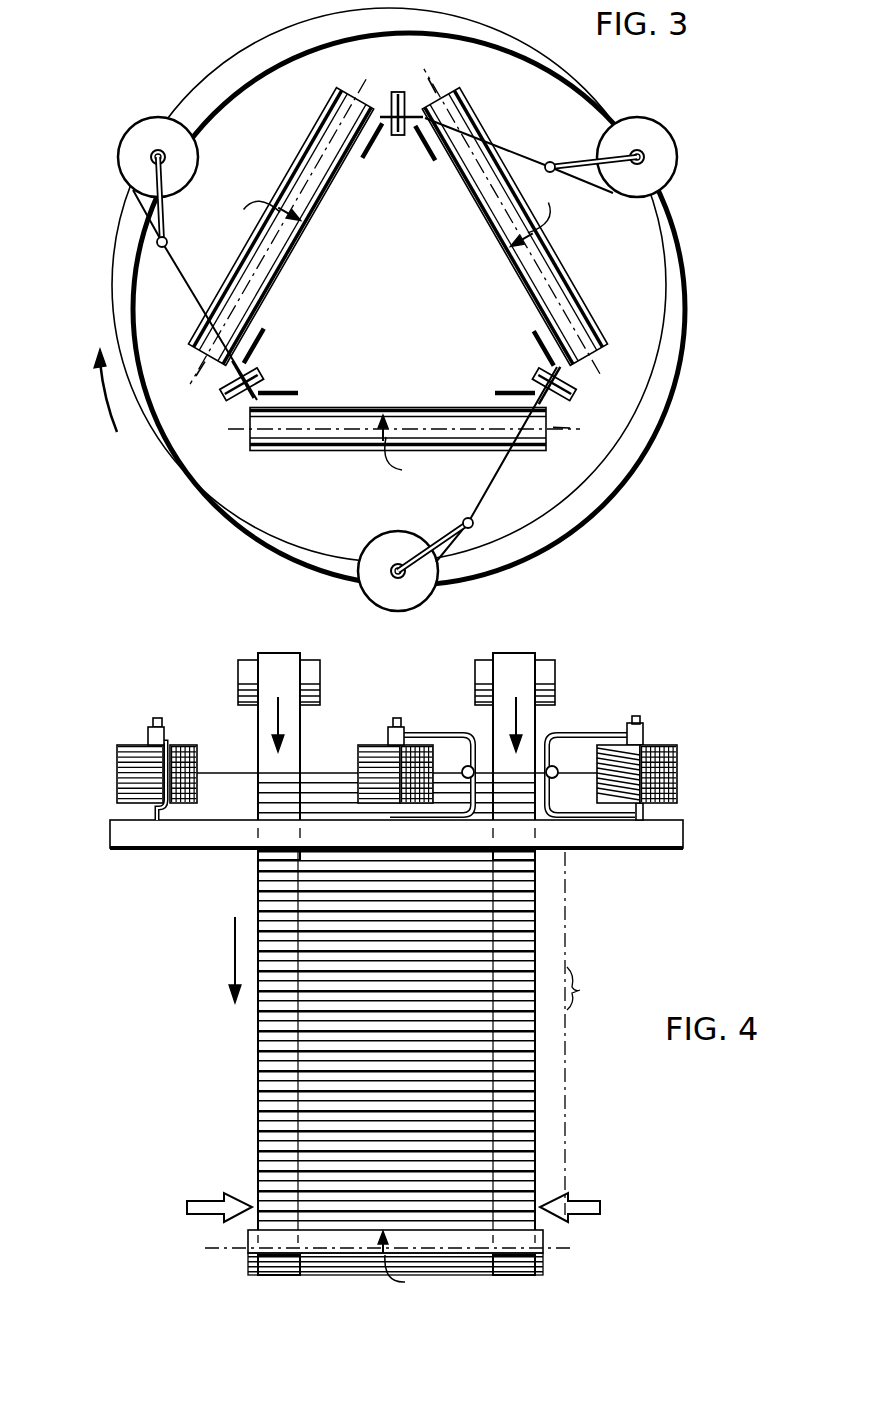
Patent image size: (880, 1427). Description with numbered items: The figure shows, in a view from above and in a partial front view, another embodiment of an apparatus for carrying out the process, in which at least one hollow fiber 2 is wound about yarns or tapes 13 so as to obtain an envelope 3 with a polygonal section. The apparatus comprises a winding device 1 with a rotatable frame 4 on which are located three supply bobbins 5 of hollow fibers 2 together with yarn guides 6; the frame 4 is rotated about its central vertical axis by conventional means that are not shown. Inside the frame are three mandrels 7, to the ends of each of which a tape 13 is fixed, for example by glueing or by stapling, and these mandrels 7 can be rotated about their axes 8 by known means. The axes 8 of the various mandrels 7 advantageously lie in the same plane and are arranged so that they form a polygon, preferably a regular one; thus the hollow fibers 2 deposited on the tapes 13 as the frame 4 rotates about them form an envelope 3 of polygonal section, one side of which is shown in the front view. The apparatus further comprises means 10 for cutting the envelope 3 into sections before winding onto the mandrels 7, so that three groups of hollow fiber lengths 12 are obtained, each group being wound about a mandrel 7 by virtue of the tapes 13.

In FIG. 3, the winding device 1 is at (694, 248).
In FIG. 4, the winding device 1 is at (407, 966).
In FIG. 3, the hollow fiber 2 is at (184, 290).
In FIG. 4, the hollow fiber 2 is at (333, 770).
In FIG. 3, the envelope 3 is at (353, 402).
In FIG. 4, the envelope 3 is at (430, 1006).
In FIG. 3, the rotatable frame 4 is at (670, 344).
In FIG. 4, the rotatable frame 4 is at (673, 833).
In FIG. 3, the supply bobbin 5 is at (150, 122).
In FIG. 4, the supply bobbin 5 is at (120, 752).
In FIG. 3, the yarn guide 6 is at (168, 240).
In FIG. 4, the yarn guide 6 is at (187, 747).
In FIG. 3, the mandrel 7 is at (323, 123).
In FIG. 4, the mandrel 7 is at (457, 1238).
In FIG. 3, the mandrel axis 8 is at (312, 182).
In FIG. 4, the mandrel axis 8 is at (230, 1249).
In FIG. 3, the cutting means 10 is at (406, 106).
In FIG. 4, the cutting means 10 is at (207, 1192).
In FIG. 4, the hollow fiber length 12 is at (333, 1265).
In FIG. 3, the tape 13 is at (282, 392).
In FIG. 4, the tape 13 is at (285, 658).